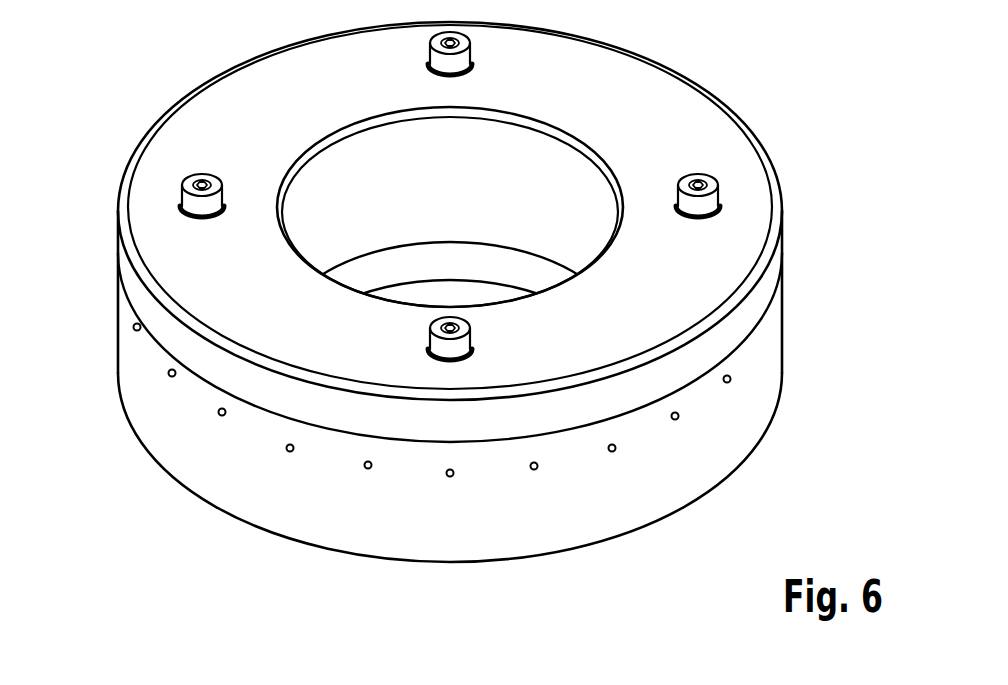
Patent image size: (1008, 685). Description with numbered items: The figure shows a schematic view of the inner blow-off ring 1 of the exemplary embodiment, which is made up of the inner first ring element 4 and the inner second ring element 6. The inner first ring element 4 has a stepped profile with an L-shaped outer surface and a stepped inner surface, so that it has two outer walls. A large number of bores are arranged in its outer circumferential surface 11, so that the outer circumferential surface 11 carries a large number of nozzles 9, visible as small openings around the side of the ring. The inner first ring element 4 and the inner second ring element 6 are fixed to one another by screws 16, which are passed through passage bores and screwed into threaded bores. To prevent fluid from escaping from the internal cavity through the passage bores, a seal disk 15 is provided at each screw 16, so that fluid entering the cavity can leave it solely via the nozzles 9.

The inner blow-off ring 1 is at (104, 88).
The inner first ring element 4 is at (213, 463).
The inner second ring element 6 is at (667, 112).
The nozzles 9 is at (290, 452).
The outer circumferential surface 11 is at (705, 441).
The seal disk 15 is at (720, 214).
The screws 16 is at (717, 181).